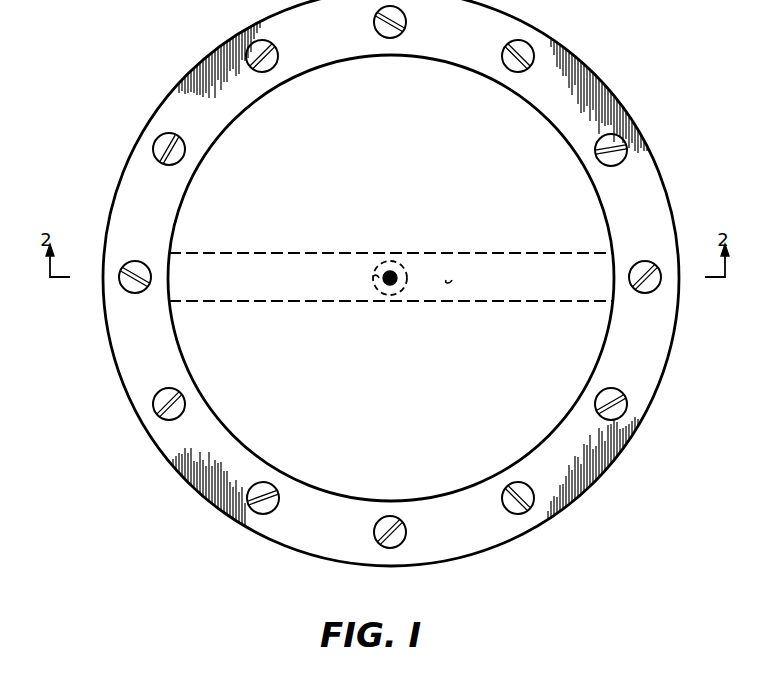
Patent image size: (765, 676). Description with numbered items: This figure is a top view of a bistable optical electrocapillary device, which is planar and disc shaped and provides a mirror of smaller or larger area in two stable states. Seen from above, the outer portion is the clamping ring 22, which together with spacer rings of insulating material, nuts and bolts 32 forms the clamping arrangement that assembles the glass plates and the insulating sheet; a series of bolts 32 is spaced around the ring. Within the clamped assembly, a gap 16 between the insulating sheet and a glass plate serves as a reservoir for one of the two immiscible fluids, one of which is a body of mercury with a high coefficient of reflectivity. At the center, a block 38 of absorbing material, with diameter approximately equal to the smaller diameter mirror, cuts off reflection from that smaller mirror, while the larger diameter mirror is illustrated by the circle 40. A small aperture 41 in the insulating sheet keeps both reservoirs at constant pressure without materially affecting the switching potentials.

The gap 16 is at (391, 278).
The clamping ring 22 is at (610, 91).
The bolts 32 is at (406, 22).
The block of absorbing material 38 is at (392, 272).
The circle 40 is at (374, 276).
The small aperture 41 is at (446, 280).